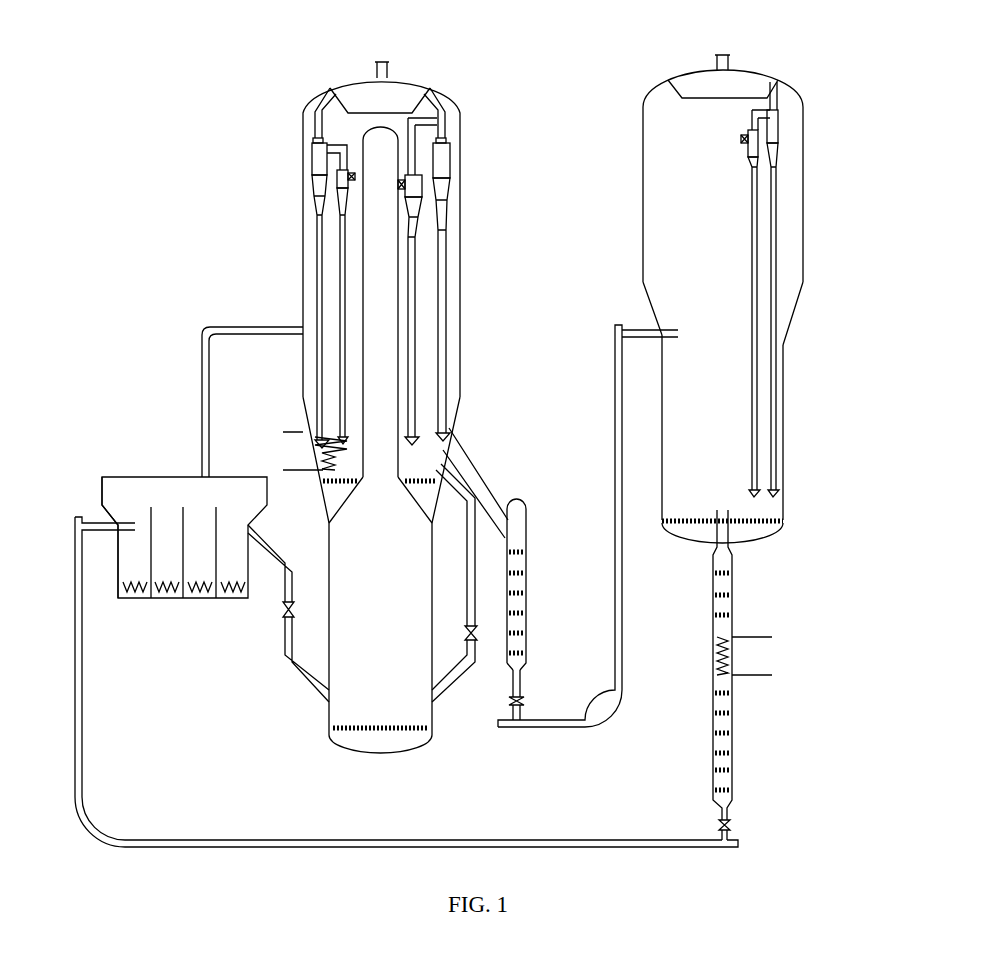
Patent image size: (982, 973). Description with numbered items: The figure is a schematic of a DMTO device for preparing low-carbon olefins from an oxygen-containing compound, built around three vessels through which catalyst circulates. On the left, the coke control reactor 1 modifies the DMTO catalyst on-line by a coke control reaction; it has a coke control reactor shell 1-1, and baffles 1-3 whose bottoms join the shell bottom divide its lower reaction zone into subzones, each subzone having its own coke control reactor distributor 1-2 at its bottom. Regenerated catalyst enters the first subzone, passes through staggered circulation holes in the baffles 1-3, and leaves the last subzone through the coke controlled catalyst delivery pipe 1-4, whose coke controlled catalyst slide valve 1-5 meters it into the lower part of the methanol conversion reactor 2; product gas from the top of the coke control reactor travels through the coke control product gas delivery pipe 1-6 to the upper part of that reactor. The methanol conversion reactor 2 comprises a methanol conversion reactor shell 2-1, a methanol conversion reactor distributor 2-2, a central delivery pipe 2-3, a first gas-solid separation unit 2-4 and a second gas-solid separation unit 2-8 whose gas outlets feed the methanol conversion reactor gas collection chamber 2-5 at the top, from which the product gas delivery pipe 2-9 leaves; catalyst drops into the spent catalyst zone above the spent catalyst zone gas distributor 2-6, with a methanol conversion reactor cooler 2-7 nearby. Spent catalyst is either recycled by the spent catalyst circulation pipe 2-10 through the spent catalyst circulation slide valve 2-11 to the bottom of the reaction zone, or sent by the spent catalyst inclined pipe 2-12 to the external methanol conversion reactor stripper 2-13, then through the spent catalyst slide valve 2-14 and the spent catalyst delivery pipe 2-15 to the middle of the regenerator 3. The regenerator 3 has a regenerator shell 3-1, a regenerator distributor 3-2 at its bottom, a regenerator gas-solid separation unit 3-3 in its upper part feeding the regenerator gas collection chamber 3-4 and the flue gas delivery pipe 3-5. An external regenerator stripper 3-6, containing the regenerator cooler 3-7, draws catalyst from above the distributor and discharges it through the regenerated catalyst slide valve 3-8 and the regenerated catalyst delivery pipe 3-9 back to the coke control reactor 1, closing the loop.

The coke control reactor 1 is at (140, 493).
The coke control reactor shell 1-1 is at (98, 484).
The coke control reactor distributor 1-2 is at (227, 598).
The baffle 1-3 is at (215, 512).
The coke controlled catalyst delivery pipe 1-4 is at (277, 557).
The coke controlled catalyst slide valve 1-5 is at (290, 603).
The coke control product gas delivery pipe 1-6 is at (203, 350).
The methanol conversion reactor 2 is at (310, 255).
The methanol conversion reactor shell 2-1 is at (302, 145).
The methanol conversion reactor distributor 2-2 is at (348, 727).
The delivery pipe 2-3 is at (398, 335).
The first gas-solid separation unit of the methanol conversion reactor 2-4 is at (420, 185).
The methanol conversion reactor gas collection chamber 2-5 is at (397, 93).
The spent catalyst zone gas distributor 2-6 is at (437, 481).
The methanol conversion reactor cooler 2-7 is at (300, 427).
The second gas-solid separation unit of the methanol conversion reactor 2-8 is at (310, 177).
The product gas delivery pipe 2-9 is at (377, 62).
The spent catalyst circulation pipe 2-10 is at (477, 567).
The spent catalyst circulation slide valve 2-11 is at (478, 640).
The spent catalyst inclined pipe 2-12 is at (470, 478).
The methanol conversion reactor stripper 2-13 is at (520, 597).
The spent catalyst slide valve 2-14 is at (521, 700).
The spent catalyst delivery pipe 2-15 is at (622, 645).
The regenerator 3 is at (690, 268).
The regenerator shell 3-1 is at (642, 190).
The regenerator distributor 3-2 is at (757, 528).
The regenerator gas-solid separation unit 3-3 is at (777, 130).
The regenerator gas collection chamber 3-4 is at (742, 85).
The flue gas delivery pipe 3-5 is at (717, 55).
The regenerator stripper 3-6 is at (732, 740).
The regenerator cooler 3-7 is at (750, 637).
The regenerated catalyst slide valve 3-8 is at (730, 820).
The regenerated catalyst delivery pipe 3-9 is at (80, 790).